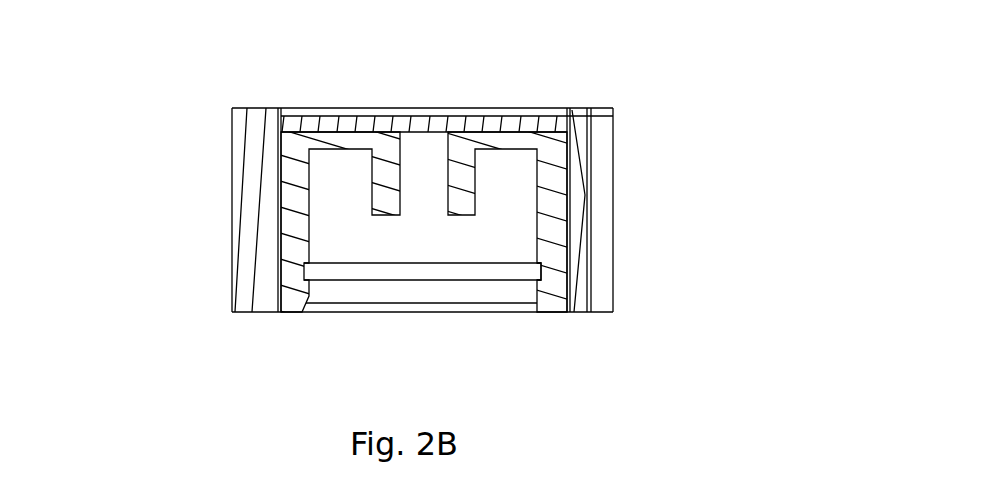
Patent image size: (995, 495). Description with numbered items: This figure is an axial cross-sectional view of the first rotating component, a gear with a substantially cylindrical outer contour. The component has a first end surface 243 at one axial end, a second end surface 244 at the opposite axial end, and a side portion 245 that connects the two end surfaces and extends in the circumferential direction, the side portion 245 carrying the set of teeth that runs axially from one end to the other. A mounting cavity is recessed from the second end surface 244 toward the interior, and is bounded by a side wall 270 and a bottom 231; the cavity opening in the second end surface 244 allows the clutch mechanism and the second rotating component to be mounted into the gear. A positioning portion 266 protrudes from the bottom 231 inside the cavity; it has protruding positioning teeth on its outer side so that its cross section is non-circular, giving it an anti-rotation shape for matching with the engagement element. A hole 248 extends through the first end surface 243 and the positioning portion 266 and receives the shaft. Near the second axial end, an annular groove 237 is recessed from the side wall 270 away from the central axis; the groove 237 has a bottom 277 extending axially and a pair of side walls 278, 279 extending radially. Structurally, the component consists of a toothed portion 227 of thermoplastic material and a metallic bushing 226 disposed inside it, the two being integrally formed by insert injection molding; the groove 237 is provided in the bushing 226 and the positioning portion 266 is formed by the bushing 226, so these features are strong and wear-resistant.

The first end surface 243 is at (283, 111).
The second end surface 244 is at (291, 312).
The side portion 245 is at (232, 213).
The positioning portion 266 is at (283, 166).
The side wall 270 is at (305, 243).
The hole 248 is at (420, 150).
The bottom 231 is at (513, 149).
The side wall of the groove 279 is at (540, 273).
The groove 237 is at (540, 273).
The bottom of the groove 277 is at (540, 273).
The side wall of the groove 278 is at (540, 279).
The toothed portion 227 is at (568, 119).
The bushing 226 is at (580, 170).